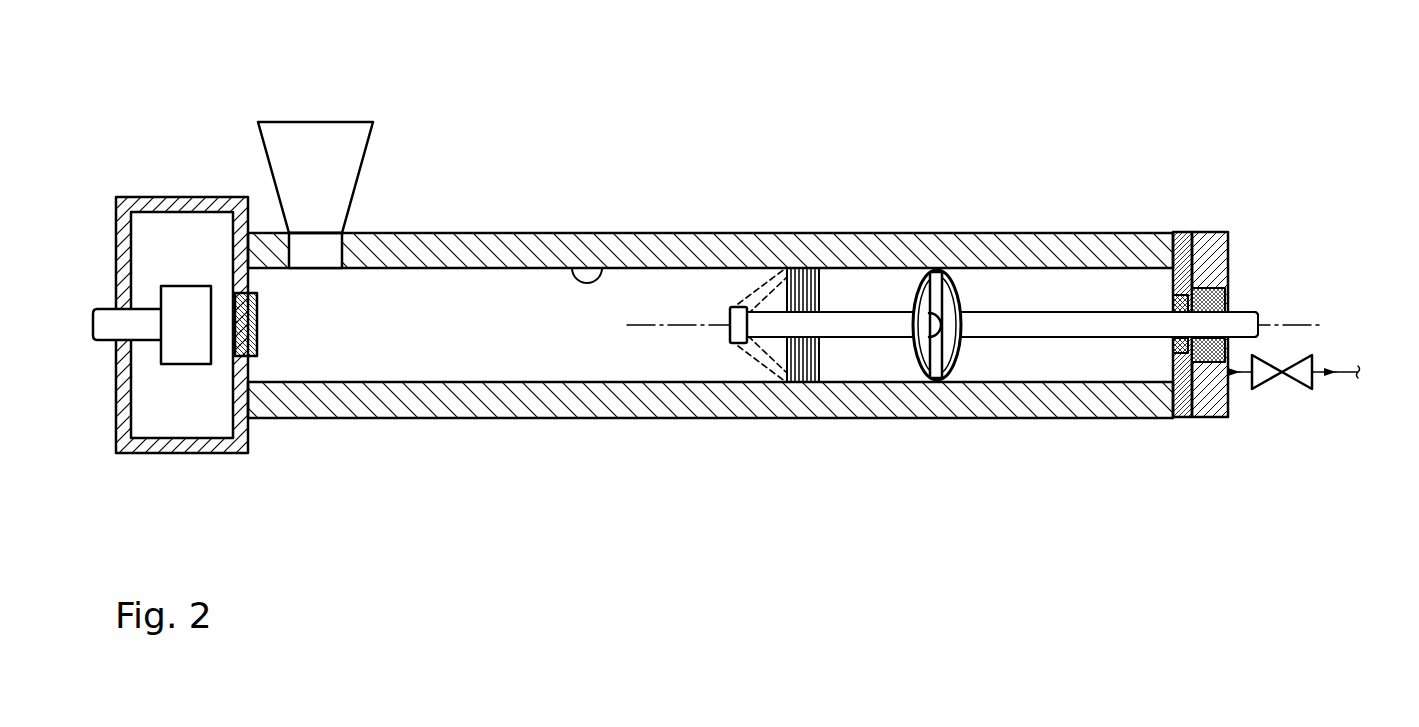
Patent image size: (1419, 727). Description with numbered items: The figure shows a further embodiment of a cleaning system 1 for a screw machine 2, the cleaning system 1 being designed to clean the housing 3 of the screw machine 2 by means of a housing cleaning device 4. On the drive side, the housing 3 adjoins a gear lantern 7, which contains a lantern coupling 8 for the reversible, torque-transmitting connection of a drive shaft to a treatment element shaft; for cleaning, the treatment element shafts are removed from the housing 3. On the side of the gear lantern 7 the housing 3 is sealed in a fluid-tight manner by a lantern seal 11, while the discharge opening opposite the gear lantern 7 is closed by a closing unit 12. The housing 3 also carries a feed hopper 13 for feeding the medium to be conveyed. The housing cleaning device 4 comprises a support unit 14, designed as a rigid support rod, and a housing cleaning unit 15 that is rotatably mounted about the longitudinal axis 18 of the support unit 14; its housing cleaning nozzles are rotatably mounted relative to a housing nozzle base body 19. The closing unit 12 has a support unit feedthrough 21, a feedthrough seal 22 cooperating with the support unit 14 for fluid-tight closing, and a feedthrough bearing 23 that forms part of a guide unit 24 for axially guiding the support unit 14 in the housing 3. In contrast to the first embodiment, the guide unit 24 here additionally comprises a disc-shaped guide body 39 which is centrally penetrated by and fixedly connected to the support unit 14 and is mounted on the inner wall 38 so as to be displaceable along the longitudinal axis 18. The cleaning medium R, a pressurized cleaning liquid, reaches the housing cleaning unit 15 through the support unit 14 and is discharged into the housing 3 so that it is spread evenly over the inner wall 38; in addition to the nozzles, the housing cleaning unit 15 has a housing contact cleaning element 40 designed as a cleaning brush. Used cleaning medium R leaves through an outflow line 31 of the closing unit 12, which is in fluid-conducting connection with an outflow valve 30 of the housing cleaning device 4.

The cleaning system 1 is at (743, 298).
The screw machine 2 is at (710, 237).
The housing 3 is at (508, 250).
The housing cleaning device 4 is at (1070, 313).
The gear lantern 7 is at (163, 201).
The lantern coupling 8 is at (182, 305).
The lantern seal 11 is at (232, 332).
The closing unit 12 is at (1206, 230).
The feed hopper 13 is at (317, 128).
The support unit 14 is at (1012, 318).
The housing cleaning unit 15 is at (724, 334).
The longitudinal axis 18 is at (702, 322).
The housing nozzle base body 19 is at (737, 345).
The cleaning medium R is at (756, 368).
The support unit feedthrough 21 is at (1191, 300).
The feedthrough seal 22 is at (1175, 302).
The feedthrough bearing 23 is at (1210, 300).
The guide unit 24 is at (1252, 247).
The outflow valve 30 is at (1300, 373).
The outflow line 31 is at (1238, 373).
The inner wall 38 is at (574, 281).
The guide body 39 is at (935, 280).
The housing contact cleaning element 40 is at (819, 290).